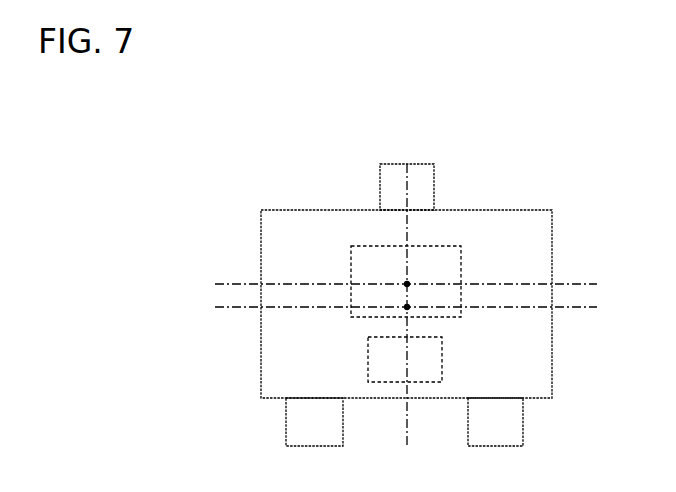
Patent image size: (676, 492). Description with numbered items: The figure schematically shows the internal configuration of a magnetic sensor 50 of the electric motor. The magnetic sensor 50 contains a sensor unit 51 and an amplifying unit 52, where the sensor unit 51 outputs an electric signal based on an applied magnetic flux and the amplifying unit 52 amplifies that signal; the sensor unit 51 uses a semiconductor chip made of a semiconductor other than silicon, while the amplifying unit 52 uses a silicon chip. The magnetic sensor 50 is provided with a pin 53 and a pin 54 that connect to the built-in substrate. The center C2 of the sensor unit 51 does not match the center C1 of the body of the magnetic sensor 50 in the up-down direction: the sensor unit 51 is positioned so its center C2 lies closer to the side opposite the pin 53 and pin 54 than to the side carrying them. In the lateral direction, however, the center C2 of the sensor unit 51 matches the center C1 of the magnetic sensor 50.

The magnetic sensor 50 is at (494, 211).
The sensor unit 51 is at (461, 258).
The amplifying unit 52 is at (442, 366).
The pin 53 is at (292, 434).
The pin 54 is at (512, 428).
The center of the magnetic sensor C1 is at (407, 306).
The center of the sensor unit C2 is at (406, 284).